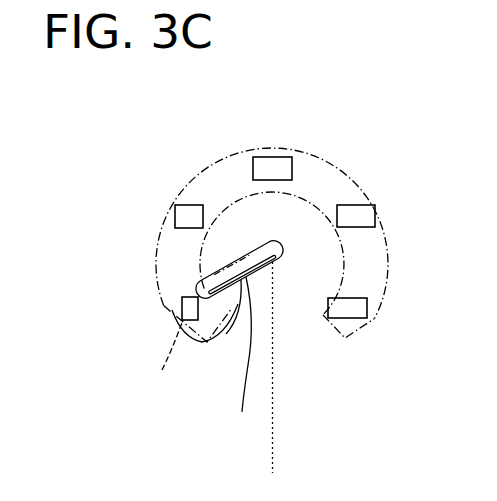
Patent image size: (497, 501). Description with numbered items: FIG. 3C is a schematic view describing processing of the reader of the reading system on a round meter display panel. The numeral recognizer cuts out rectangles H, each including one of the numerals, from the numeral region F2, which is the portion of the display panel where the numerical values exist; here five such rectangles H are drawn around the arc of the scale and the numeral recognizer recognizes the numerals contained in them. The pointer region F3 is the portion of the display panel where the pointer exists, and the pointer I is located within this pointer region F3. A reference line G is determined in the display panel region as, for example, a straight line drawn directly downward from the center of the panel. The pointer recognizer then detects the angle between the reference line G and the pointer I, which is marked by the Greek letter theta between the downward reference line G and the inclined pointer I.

The rectangles H is at (268, 152).
The numeral region F2 is at (162, 370).
The pointer region F3 is at (236, 316).
The pointer I is at (245, 363).
The reference line G is at (273, 447).